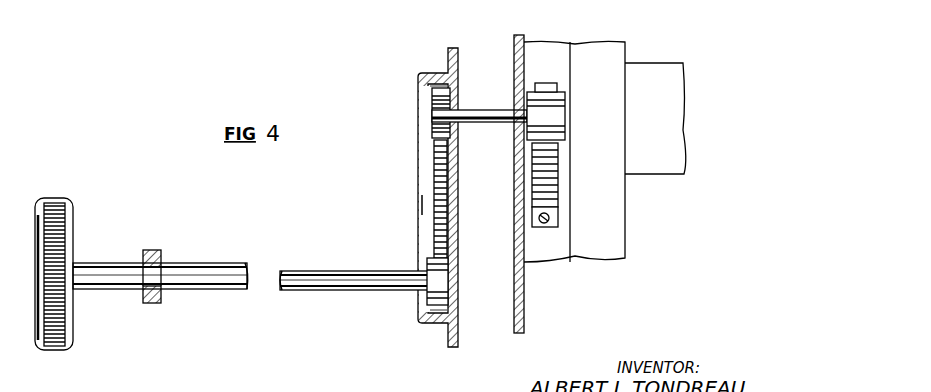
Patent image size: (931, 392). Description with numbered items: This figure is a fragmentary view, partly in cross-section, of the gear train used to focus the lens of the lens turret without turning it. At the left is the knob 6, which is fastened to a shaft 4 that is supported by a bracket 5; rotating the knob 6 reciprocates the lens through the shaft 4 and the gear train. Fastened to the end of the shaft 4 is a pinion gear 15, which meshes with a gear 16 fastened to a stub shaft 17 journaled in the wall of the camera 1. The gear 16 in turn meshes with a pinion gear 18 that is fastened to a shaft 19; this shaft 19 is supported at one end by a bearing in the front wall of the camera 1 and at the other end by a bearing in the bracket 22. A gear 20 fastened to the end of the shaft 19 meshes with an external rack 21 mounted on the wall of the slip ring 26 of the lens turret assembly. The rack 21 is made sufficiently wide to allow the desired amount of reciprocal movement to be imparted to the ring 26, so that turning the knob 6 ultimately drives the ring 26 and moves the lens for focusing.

The camera 1 is at (448, 60).
The shaft 4 is at (247, 289).
The bracket 5 is at (153, 257).
The knob 6 is at (46, 350).
The pinion gear 15 is at (448, 278).
The gear 16 is at (446, 186).
The stub shaft 17 is at (425, 205).
The pinion gear 18 is at (450, 128).
The shaft 19 is at (481, 110).
The gear 20 is at (560, 96).
The external rack 21 is at (560, 168).
The bracket 22 is at (524, 292).
The slip ring 26 is at (585, 50).